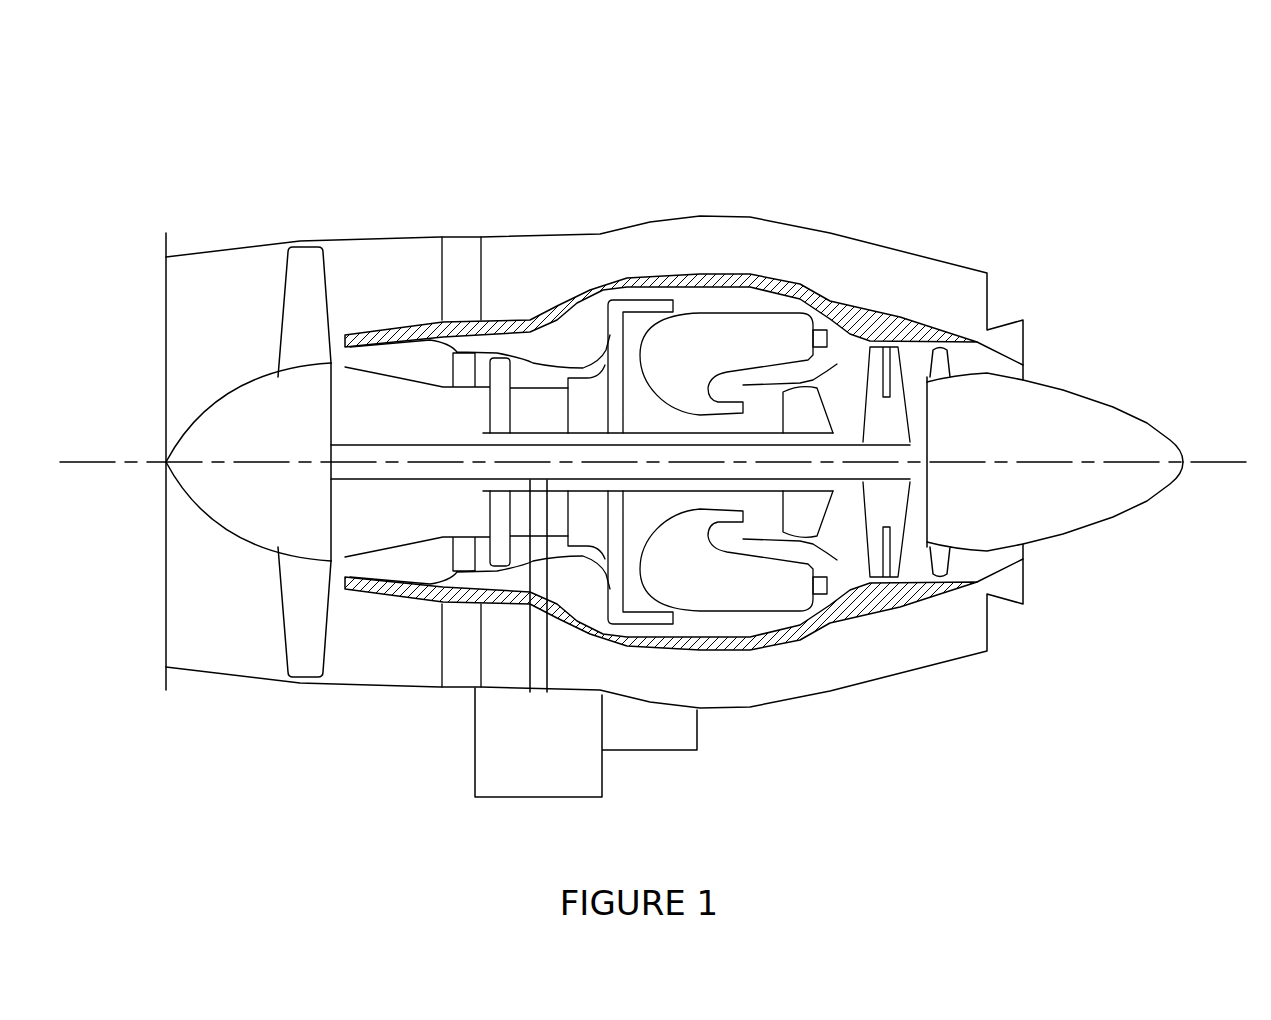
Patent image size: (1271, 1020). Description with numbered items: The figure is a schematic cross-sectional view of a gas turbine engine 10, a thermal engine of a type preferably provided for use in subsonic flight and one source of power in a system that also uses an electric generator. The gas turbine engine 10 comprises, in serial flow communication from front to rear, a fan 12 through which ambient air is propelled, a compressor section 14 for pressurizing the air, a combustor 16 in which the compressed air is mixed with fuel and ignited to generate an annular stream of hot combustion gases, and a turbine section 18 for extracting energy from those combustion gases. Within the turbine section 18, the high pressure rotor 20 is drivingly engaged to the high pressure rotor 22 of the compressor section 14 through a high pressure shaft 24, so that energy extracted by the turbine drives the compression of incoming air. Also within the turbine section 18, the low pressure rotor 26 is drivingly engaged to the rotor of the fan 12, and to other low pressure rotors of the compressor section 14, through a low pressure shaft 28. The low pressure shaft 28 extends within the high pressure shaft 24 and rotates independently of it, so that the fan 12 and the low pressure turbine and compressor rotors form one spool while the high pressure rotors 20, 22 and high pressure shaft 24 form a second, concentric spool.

The gas turbine engine 10 is at (863, 158).
The fan 12 is at (297, 602).
The compressor section 14 is at (532, 370).
The combustor 16 is at (727, 335).
The turbine section 18 is at (843, 583).
The high pressure rotor 20 is at (803, 387).
The high pressure rotor 22 is at (597, 390).
The high pressure shaft 24 is at (738, 392).
The low pressure rotor 26 is at (817, 433).
The low pressure shaft 28 is at (383, 483).